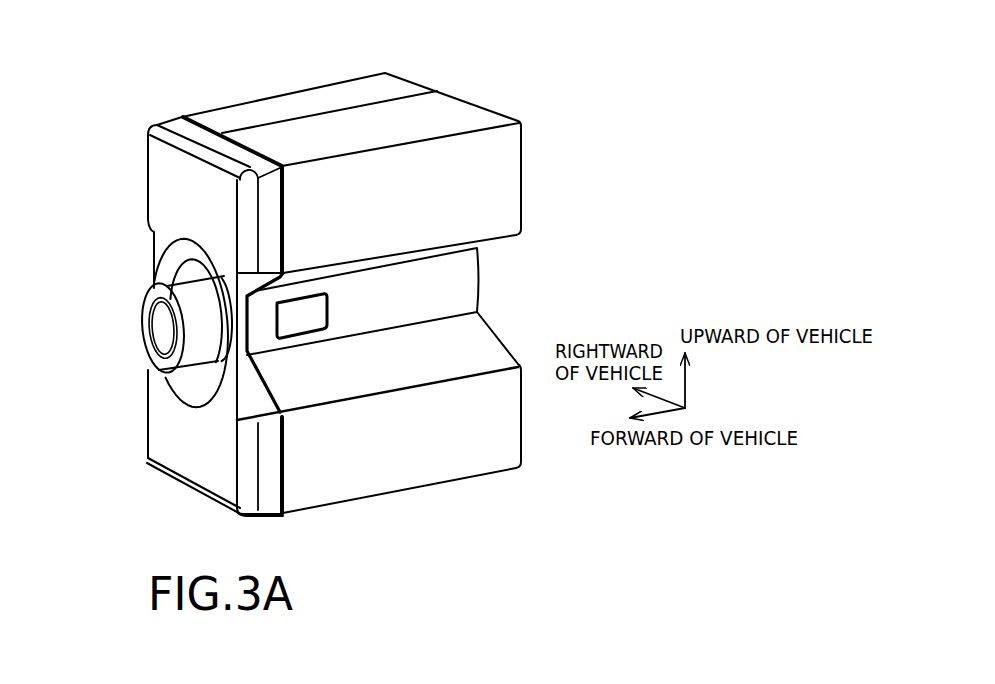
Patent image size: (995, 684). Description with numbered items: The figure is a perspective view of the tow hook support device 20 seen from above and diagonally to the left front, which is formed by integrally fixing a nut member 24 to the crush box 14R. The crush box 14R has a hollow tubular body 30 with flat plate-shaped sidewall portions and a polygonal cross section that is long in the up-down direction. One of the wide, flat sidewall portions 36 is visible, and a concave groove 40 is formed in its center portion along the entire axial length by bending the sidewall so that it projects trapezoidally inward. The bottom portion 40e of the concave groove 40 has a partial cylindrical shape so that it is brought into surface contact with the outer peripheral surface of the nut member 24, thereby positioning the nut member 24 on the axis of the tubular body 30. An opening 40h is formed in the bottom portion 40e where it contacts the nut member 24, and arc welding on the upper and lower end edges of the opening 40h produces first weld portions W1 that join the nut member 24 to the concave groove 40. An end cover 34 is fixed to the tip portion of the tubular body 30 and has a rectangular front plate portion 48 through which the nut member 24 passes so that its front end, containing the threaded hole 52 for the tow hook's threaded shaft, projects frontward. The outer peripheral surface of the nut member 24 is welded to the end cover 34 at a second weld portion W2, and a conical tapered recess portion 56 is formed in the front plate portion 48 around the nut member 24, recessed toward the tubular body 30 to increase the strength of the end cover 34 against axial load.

The tow hook support device 20 is at (302, 281).
The tubular body 30 is at (363, 293).
The crush box 14R is at (365, 281).
The nut member 24 is at (180, 289).
The threaded hole 52 is at (152, 338).
The tapered recess portion 56 is at (168, 382).
The end cover 34 is at (182, 326).
The front plate portion 48 is at (193, 465).
The opening 40h is at (302, 337).
The sidewall portion 36 is at (437, 467).
The concave groove 40 is at (390, 393).
The bottom portion 40e is at (455, 288).
The first weld portion W1 is at (302, 300).
The second weld portion W2 is at (216, 280).